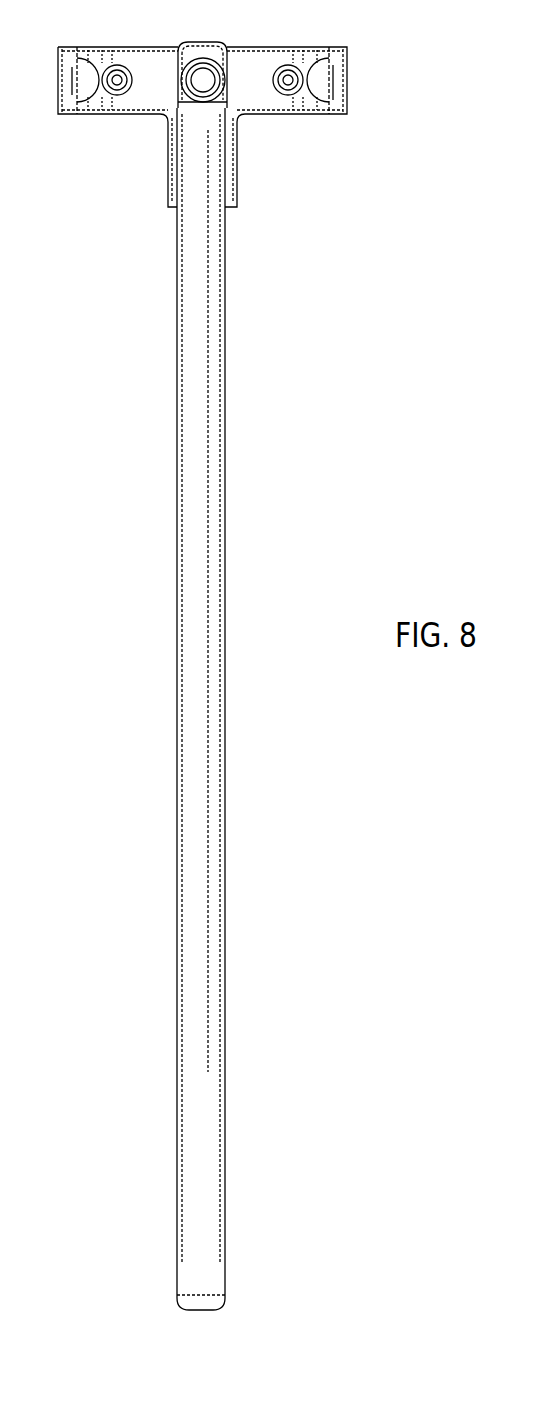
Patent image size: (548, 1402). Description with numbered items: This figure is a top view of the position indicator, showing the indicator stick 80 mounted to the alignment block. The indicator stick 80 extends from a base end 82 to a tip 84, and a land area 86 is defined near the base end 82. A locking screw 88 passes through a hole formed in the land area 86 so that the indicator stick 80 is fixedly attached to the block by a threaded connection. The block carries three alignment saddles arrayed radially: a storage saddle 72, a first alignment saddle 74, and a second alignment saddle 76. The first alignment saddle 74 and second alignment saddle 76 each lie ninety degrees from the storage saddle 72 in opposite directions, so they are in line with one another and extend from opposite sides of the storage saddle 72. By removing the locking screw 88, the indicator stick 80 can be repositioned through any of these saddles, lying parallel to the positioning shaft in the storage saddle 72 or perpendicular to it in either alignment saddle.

The storage saddle 72 is at (231, 192).
The first alignment saddle 74 is at (72, 81).
The second alignment saddle 76 is at (338, 79).
The indicator stick 80 is at (252, 612).
The base end 82 is at (203, 42).
The tip 84 is at (197, 1310).
The land area 86 is at (212, 49).
The locking screw 88 is at (181, 81).